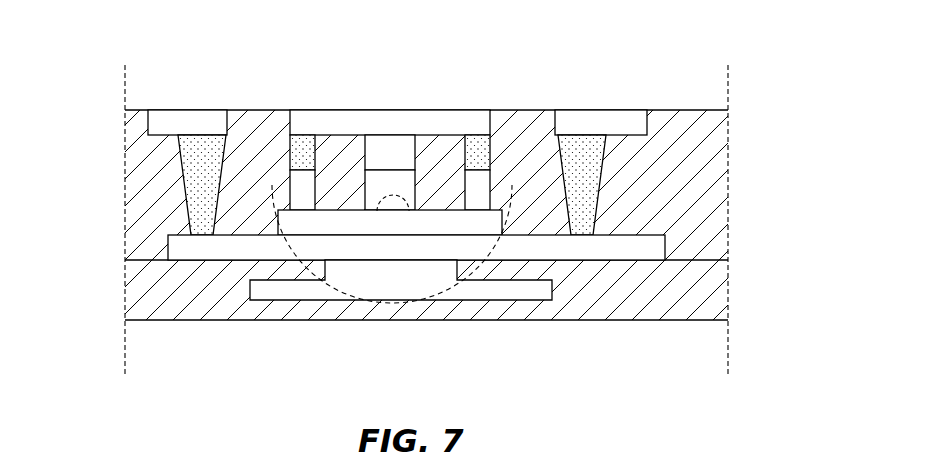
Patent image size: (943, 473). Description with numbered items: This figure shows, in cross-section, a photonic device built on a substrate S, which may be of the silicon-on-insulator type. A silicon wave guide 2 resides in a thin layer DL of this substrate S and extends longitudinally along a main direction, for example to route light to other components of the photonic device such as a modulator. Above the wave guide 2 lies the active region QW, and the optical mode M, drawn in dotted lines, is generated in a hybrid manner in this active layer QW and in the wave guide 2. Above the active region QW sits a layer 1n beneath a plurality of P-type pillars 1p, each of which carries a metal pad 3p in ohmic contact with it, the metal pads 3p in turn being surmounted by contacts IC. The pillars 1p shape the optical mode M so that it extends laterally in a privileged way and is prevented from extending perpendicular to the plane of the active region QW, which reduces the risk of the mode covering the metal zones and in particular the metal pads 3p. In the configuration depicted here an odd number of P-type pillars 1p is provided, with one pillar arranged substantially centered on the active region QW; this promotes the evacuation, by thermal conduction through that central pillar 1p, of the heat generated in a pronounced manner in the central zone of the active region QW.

The integrated circuit IC is at (175, 109).
The P-type pillar 1p is at (297, 172).
The metal pad 3p is at (306, 138).
The n-type semiconductor layer 1n is at (660, 247).
The active layer QW is at (390, 215).
The optical mode M is at (318, 295).
The silicon wave guide 2 is at (405, 268).
The substrate S is at (116, 262).
The thin layer DL is at (715, 302).